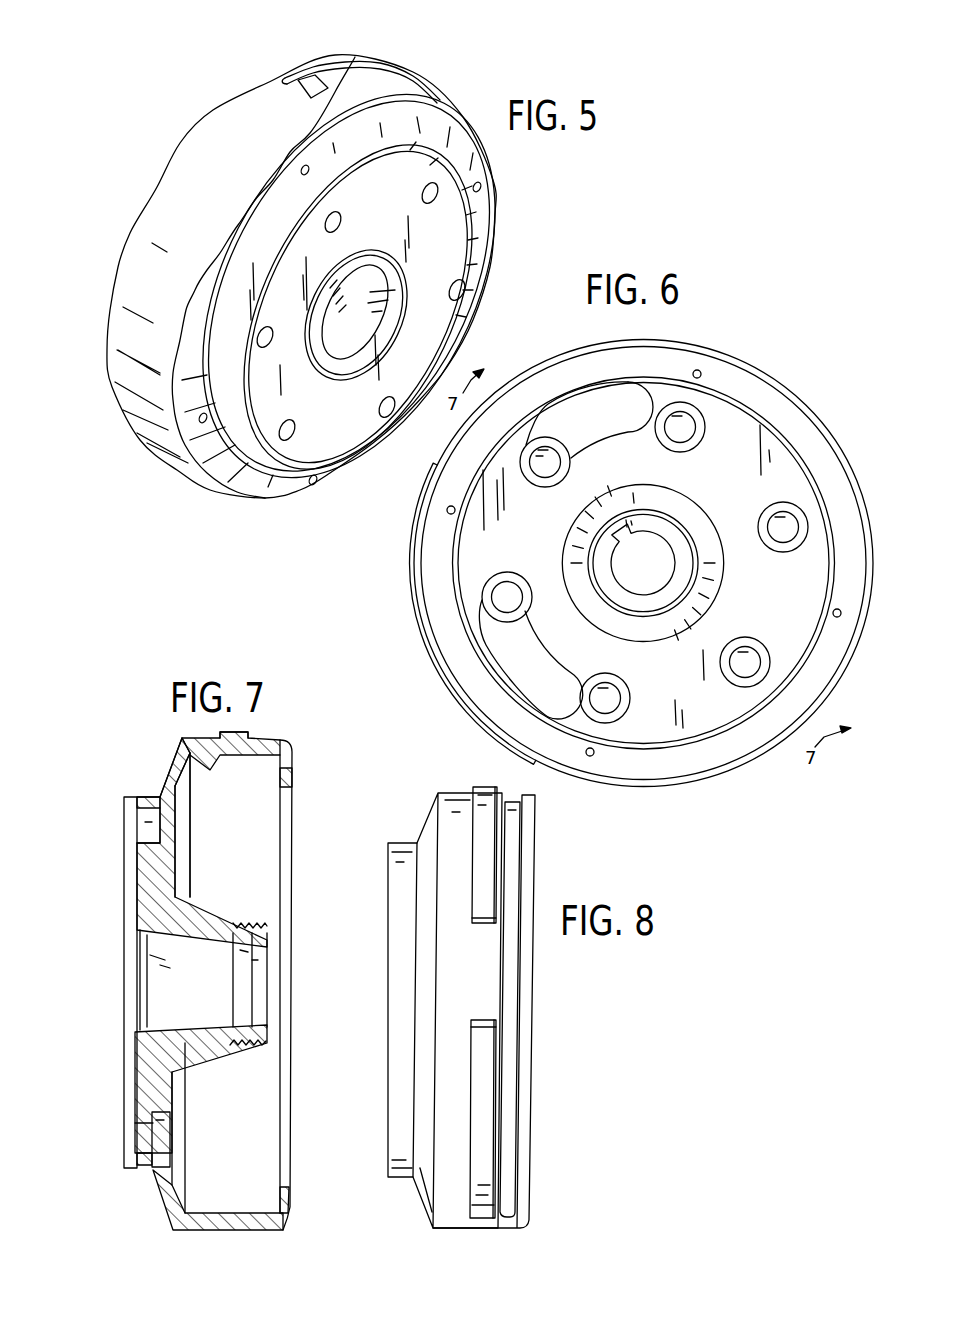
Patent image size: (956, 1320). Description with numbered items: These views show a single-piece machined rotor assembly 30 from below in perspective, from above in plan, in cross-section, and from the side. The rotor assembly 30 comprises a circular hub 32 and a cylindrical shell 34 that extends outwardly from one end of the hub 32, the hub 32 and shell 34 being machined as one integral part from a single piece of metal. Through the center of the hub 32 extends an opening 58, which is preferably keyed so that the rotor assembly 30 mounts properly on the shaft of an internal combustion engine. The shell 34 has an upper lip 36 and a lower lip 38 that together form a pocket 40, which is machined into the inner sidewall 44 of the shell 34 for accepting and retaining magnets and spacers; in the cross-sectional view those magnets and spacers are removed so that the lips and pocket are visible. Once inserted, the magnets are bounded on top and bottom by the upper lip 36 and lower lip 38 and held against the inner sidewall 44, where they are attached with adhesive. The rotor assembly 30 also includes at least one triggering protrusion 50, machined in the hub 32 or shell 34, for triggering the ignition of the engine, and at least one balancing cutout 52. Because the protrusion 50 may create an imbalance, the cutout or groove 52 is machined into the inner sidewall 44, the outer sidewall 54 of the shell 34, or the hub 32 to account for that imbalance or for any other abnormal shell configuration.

In FIG. 5, the rotor assembly 30 is at (140, 167).
In FIG. 6, the rotor assembly 30 is at (805, 380).
In FIG. 7, the rotor assembly 30 is at (79, 905).
In FIG. 8, the rotor assembly 30 is at (582, 1075).
In FIG. 5, the circular hub 32 is at (473, 323).
In FIG. 7, the circular hub 32 is at (128, 1173).
In FIG. 8, the circular hub 32 is at (403, 855).
In FIG. 5, the cylindrical shell 34 is at (208, 167).
In FIG. 6, the cylindrical shell 34 is at (851, 475).
In FIG. 7, the cylindrical shell 34 is at (228, 1230).
In FIG. 8, the cylindrical shell 34 is at (455, 795).
In FIG. 7, the upper lip 36 is at (293, 775).
In FIG. 7, the lower lip 38 is at (180, 758).
In FIG. 7, the pocket 40 is at (243, 760).
In FIG. 7, the inner sidewall 44 is at (187, 742).
In FIG. 5, the triggering protrusion 50 is at (380, 70).
In FIG. 6, the triggering protrusion 50 is at (420, 600).
In FIG. 7, the triggering protrusion 50 is at (233, 732).
In FIG. 8, the triggering protrusion 50 is at (480, 1197).
In FIG. 5, the balancing cutout 52 is at (288, 80).
In FIG. 7, the balancing cutout 52 is at (287, 742).
In FIG. 8, the balancing cutout 52 is at (505, 990).
In FIG. 5, the outer sidewall 54 is at (147, 277).
In FIG. 6, the outer sidewall 54 is at (694, 345).
In FIG. 7, the outer sidewall 54 is at (202, 1230).
In FIG. 8, the outer sidewall 54 is at (452, 1205).
In FIG. 5, the opening 58 is at (350, 313).
In FIG. 6, the opening 58 is at (645, 568).
In FIG. 7, the opening 58 is at (165, 990).